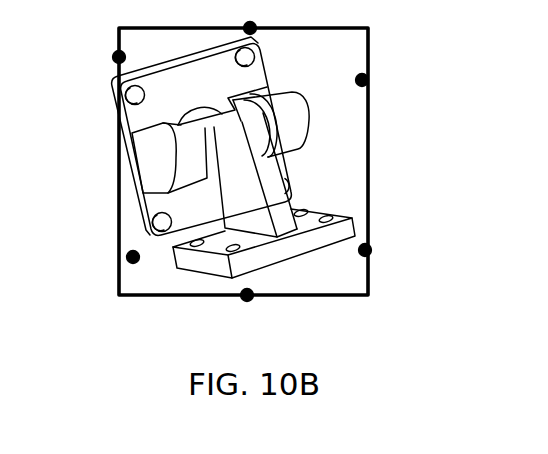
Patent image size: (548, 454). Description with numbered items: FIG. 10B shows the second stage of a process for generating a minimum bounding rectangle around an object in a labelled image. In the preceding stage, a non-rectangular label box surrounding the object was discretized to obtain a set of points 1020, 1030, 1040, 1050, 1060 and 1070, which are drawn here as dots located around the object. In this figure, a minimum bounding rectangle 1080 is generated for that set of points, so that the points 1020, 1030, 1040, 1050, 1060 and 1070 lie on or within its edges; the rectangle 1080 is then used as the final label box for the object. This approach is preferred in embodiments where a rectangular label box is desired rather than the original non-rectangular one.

The point 1020 is at (115, 56).
The point 1030 is at (252, 27).
The point 1040 is at (368, 80).
The point 1050 is at (370, 253).
The point 1060 is at (247, 302).
The point 1070 is at (128, 262).
The minimum bounding rectangle 1080 is at (358, 28).